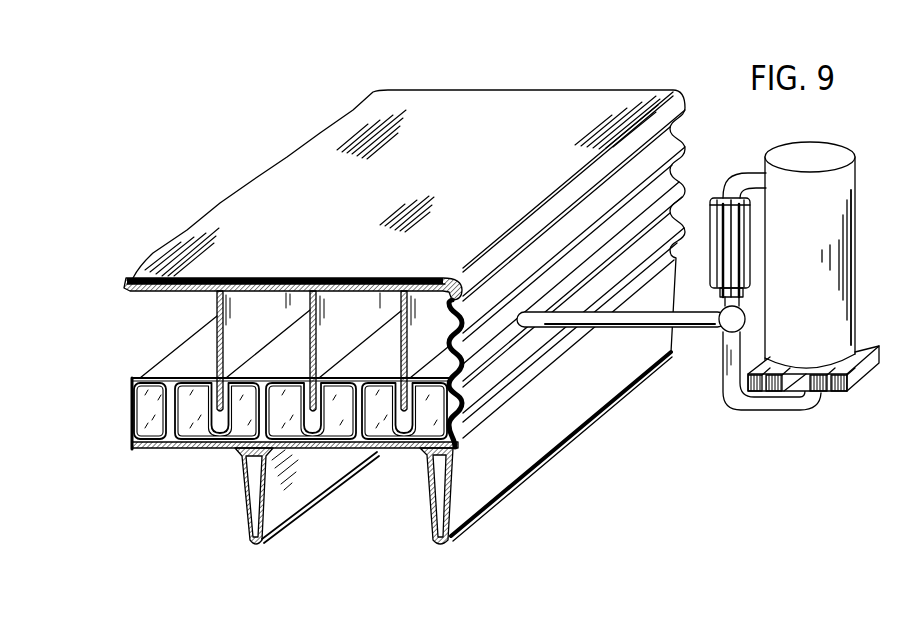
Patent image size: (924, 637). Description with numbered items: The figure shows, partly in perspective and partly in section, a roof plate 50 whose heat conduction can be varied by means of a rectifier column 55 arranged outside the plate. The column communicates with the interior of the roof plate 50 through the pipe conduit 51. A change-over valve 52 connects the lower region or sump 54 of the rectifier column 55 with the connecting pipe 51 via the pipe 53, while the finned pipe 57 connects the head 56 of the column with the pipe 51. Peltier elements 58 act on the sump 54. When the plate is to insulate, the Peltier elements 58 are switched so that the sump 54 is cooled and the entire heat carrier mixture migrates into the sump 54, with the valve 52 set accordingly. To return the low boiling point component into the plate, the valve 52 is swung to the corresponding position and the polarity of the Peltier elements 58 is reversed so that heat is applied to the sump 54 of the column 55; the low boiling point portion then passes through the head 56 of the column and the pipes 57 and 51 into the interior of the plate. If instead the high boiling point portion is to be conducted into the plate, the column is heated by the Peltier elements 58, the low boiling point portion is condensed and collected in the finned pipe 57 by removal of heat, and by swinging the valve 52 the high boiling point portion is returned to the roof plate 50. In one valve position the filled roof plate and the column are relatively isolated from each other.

The roof plate 50 is at (362, 226).
The pipe conduit 51 is at (680, 331).
The change-over valve 52 is at (723, 329).
The pipe 53 is at (777, 410).
The lower region (sump) 54 is at (840, 351).
The rectifier column 55 is at (838, 266).
The head of the column 56 is at (840, 184).
The finned pipe 57 is at (722, 198).
The Peltier elements 58 is at (858, 381).